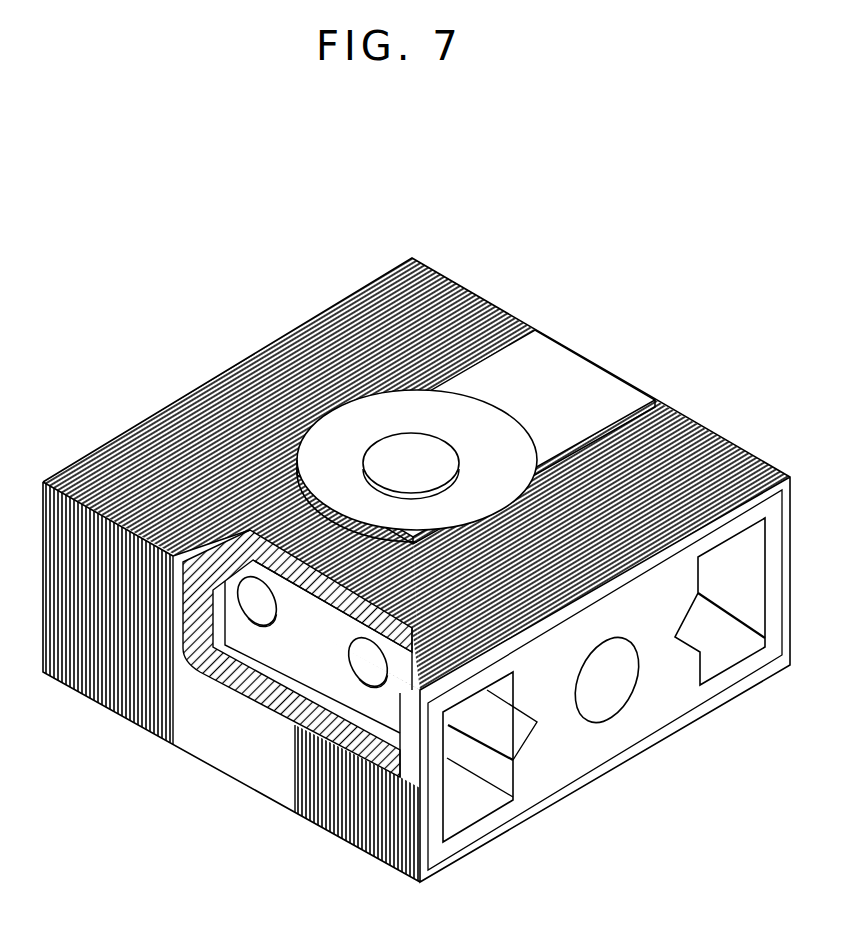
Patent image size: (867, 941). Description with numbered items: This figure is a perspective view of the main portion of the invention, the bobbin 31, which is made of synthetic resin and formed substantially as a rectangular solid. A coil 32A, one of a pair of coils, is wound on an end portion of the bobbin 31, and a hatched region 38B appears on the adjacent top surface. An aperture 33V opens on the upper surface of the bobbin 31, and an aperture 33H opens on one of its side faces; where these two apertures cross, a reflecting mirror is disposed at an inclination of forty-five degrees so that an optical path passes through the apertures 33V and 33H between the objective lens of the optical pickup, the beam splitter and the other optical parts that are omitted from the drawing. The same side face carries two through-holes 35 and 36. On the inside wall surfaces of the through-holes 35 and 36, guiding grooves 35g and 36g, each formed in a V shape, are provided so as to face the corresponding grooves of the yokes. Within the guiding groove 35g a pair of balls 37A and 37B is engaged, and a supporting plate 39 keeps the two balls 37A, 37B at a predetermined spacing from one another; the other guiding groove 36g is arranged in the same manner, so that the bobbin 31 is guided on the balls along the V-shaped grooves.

The bobbin 31 is at (605, 384).
The coil 32A is at (476, 294).
The side hatched layer 38B is at (710, 440).
The aperture 33V is at (452, 440).
The aperture 33H is at (616, 700).
The through-hole 35 is at (455, 794).
The guiding groove 35g is at (516, 728).
The through-hole 36 is at (770, 600).
The guiding groove 36g is at (712, 636).
The ball 37A is at (258, 604).
The ball 37B is at (370, 664).
The supporting plate 39 is at (287, 648).